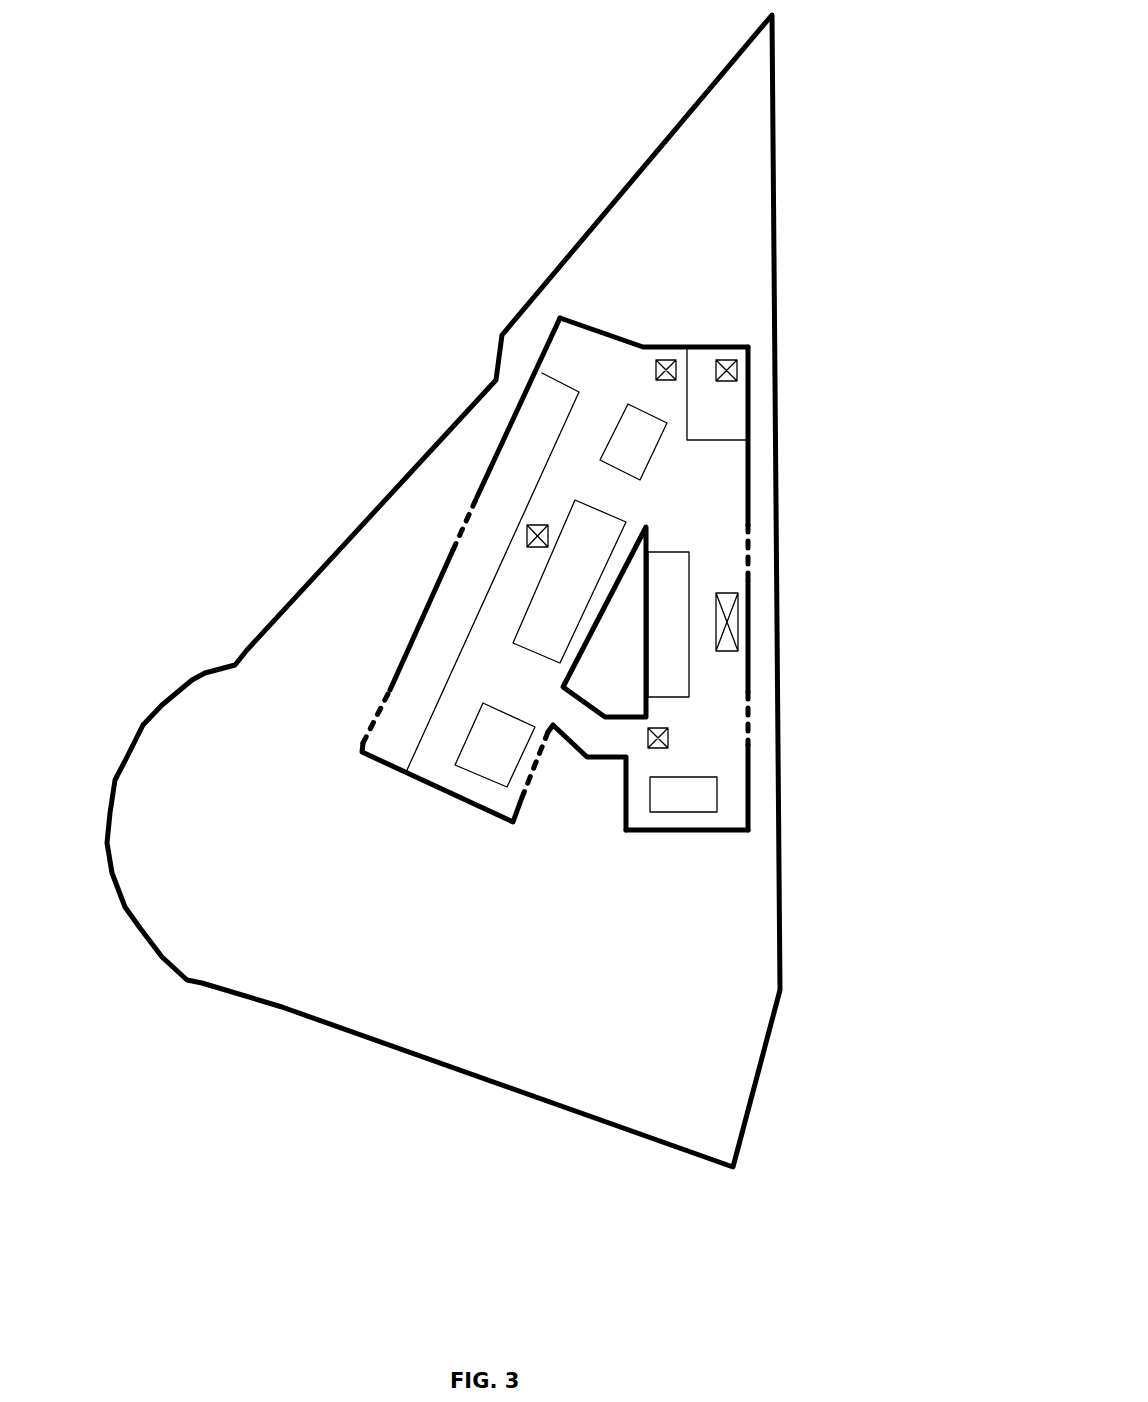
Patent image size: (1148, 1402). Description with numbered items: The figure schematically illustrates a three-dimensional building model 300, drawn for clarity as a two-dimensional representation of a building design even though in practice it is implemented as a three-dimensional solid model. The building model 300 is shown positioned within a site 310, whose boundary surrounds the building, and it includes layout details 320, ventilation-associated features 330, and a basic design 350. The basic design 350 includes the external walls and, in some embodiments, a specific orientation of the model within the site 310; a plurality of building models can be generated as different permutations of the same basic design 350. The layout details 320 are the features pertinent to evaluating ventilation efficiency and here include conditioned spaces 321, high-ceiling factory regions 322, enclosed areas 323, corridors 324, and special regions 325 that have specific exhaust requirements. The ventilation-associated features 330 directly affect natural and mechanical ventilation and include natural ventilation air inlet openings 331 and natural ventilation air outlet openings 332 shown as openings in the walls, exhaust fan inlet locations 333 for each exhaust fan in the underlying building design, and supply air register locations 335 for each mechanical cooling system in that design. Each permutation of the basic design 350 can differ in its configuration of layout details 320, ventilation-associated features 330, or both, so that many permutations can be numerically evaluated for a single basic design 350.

The 3D building model 300 is at (402, 853).
The site 310 is at (247, 650).
The layout details 320 is at (583, 367).
The conditioned spaces 321 is at (648, 465).
The high-ceiling factory regions 322 is at (602, 499).
The enclosed areas 323 is at (689, 585).
The corridors 324 is at (441, 741).
The special regions 325 is at (601, 567).
The ventilation-associated features 330 is at (751, 344).
The natural ventilation air inlet openings 331 is at (449, 533).
The natural ventilation air outlet openings 332 is at (761, 552).
The exhaust fan inlet locations 333 is at (738, 372).
The supply air register locations 335 is at (665, 358).
The basic design 350 is at (607, 332).